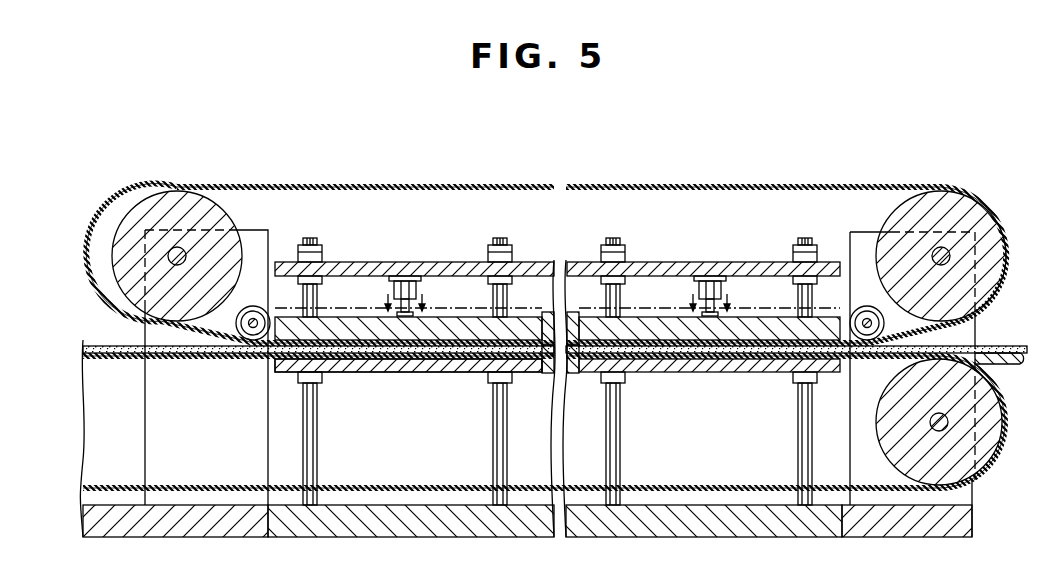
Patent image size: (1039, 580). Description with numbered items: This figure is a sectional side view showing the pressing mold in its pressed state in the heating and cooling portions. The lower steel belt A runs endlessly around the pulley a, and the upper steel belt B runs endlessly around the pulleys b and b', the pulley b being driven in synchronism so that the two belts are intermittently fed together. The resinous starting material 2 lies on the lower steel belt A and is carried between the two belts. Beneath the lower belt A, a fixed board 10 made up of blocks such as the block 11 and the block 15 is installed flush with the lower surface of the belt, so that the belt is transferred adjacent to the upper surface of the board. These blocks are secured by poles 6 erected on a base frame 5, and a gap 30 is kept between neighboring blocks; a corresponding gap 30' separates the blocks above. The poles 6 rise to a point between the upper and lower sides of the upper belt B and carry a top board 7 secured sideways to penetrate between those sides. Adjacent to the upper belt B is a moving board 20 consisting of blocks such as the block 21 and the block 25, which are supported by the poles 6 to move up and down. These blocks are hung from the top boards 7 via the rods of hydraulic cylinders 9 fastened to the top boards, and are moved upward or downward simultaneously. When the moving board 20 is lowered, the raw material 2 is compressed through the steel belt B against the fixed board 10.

The resinous starting material 2 is at (98, 344).
The base 5 is at (372, 537).
The poles 6 is at (318, 451).
The top board 7 is at (657, 268).
The hydraulic cylinders 9 is at (406, 278).
The fixed board 10 is at (398, 374).
The block 11 is at (433, 365).
The block 15 is at (661, 367).
The moving board 20 is at (356, 316).
The block 21 is at (460, 325).
The block 25 is at (766, 322).
The gap 30 is at (559, 373).
The upper spacer 30' is at (558, 314).
The lower steel belt A is at (110, 482).
The upper steel belt B is at (683, 184).
The pulley a is at (990, 442).
The pulley b is at (954, 256).
The pulley b' is at (160, 256).